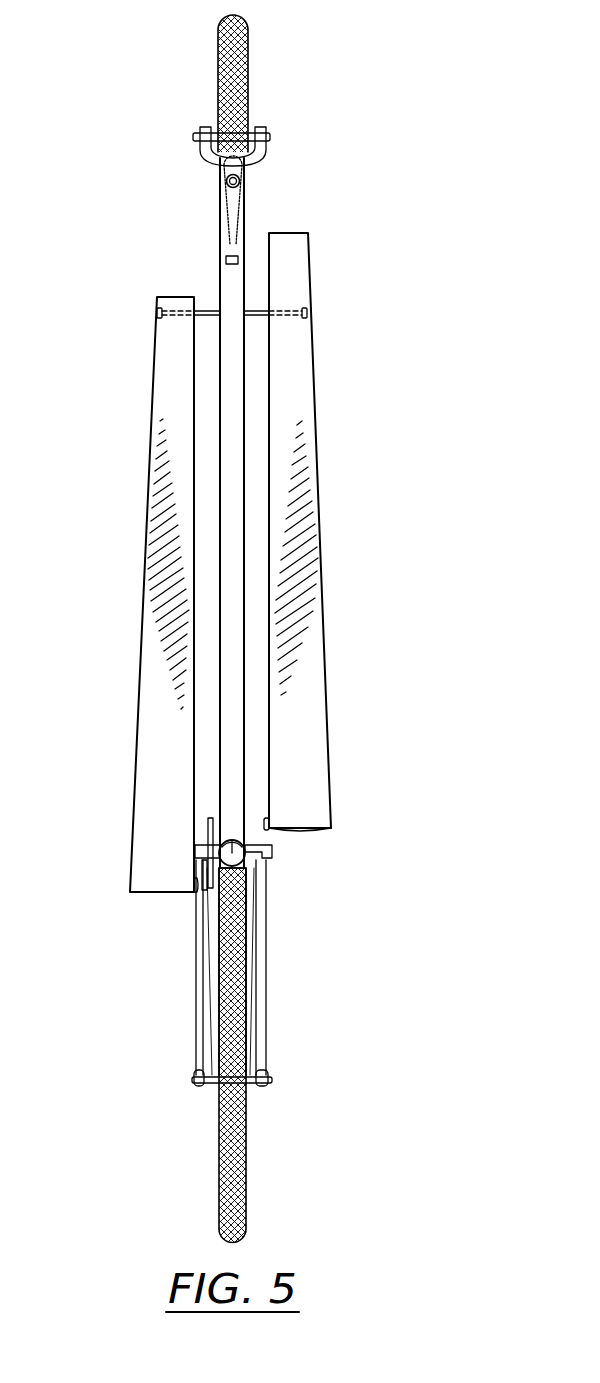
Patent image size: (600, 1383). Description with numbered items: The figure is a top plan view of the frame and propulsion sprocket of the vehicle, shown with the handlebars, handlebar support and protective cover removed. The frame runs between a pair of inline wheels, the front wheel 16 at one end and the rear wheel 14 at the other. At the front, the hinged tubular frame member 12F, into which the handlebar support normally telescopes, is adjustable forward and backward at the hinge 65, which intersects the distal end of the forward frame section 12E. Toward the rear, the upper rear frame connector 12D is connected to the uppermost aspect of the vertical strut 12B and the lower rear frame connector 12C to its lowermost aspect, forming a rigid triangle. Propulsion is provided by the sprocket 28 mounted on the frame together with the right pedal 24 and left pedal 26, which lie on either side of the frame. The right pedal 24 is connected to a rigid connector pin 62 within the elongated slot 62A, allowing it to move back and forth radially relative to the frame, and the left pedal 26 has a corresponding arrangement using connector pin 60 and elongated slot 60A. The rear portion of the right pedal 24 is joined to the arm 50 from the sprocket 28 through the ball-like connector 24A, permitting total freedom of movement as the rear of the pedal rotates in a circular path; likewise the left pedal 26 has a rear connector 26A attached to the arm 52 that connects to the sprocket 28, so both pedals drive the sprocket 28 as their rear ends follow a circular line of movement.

The front wheel 16 is at (246, 24).
The hinged tubular frame member 12F is at (241, 183).
The forward frame section 12E is at (233, 209).
The hinge 65 is at (230, 258).
The connector pin 60 is at (210, 311).
The elongated slot 60A is at (157, 313).
The connector pin 62 is at (270, 310).
The elongated slot 62A is at (315, 313).
The left pedal 26 is at (159, 380).
The right pedal 24 is at (304, 376).
The vertical strut 12B is at (232, 840).
The sprocket 28 is at (208, 830).
The rear connector 26A is at (193, 888).
The arm 52 is at (204, 893).
The ball-like connector 24A is at (270, 831).
The arm 50 is at (273, 845).
The upper rear frame connector 12D is at (258, 920).
The lower rear frame connector 12C is at (275, 1013).
The rear wheel 14 is at (247, 1203).